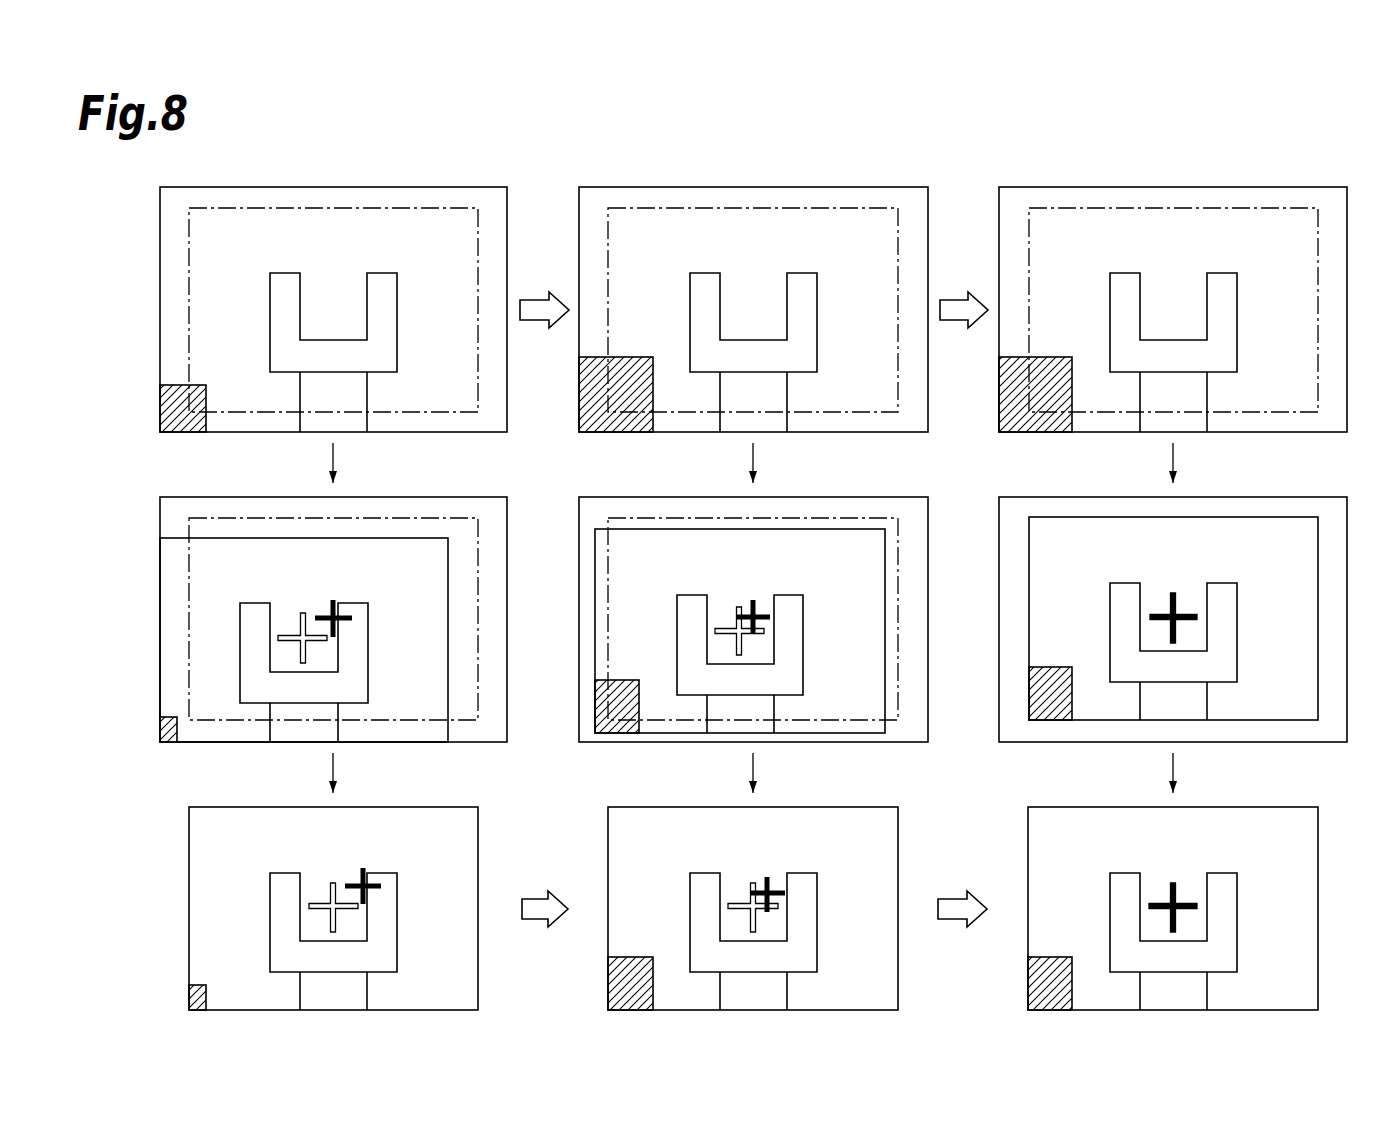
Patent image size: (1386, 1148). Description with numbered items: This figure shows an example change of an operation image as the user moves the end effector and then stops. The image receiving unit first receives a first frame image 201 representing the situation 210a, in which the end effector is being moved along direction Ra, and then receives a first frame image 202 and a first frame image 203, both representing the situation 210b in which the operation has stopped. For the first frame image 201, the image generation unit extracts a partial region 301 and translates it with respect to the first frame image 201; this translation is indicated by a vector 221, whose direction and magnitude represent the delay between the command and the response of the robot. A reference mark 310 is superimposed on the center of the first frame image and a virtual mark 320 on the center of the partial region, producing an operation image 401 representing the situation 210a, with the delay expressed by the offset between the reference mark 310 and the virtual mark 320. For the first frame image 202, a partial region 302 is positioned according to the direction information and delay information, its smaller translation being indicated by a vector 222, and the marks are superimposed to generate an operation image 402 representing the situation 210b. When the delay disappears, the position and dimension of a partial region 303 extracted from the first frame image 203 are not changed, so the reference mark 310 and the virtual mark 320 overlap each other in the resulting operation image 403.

The first frame image 201 is at (435, 187).
The first frame image 202 is at (855, 187).
The first frame image 203 is at (1275, 187).
The partial region 301 is at (368, 208).
The partial region 302 is at (790, 208).
The partial region 303 is at (1208, 208).
The situation 210a is at (432, 240).
The situation 210b is at (852, 240).
The vector 221 is at (450, 537).
The vector 222 is at (887, 529).
The reference mark 310 is at (333, 600).
The virtual mark 320 is at (298, 625).
The operation image 401 is at (368, 807).
The operation image 402 is at (790, 807).
The operation image 403 is at (1210, 807).